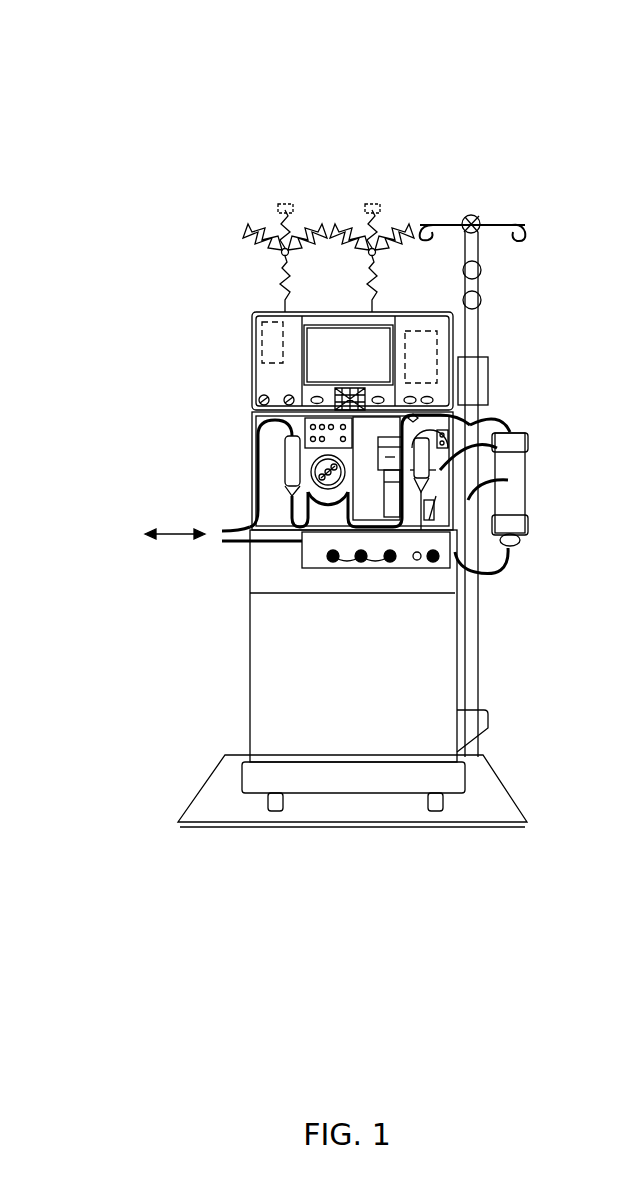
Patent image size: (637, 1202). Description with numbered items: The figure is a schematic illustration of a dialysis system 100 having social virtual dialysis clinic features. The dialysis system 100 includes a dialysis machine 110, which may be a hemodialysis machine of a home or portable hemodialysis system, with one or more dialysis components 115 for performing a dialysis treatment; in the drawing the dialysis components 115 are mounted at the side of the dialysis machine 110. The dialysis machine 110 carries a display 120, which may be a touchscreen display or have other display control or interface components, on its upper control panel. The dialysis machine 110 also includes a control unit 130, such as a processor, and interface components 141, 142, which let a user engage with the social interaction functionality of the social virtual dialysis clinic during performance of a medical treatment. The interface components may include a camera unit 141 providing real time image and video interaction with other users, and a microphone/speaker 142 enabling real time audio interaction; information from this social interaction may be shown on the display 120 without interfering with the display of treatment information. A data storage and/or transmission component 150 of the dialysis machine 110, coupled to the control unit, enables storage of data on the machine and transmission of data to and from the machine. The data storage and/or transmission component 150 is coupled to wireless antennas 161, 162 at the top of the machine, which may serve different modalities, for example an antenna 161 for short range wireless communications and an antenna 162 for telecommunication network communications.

The dialysis system 100 is at (576, 159).
The dialysis machine 110 is at (403, 738).
The dialysis components 115 is at (520, 412).
The display 120 is at (331, 365).
The control unit 130 is at (437, 355).
The camera unit 141 is at (260, 400).
The microphone/speaker 142 is at (285, 398).
The data storage and/or transmission component 150 is at (262, 345).
The wireless antenna 161 is at (284, 278).
The wireless antenna 162 is at (372, 278).